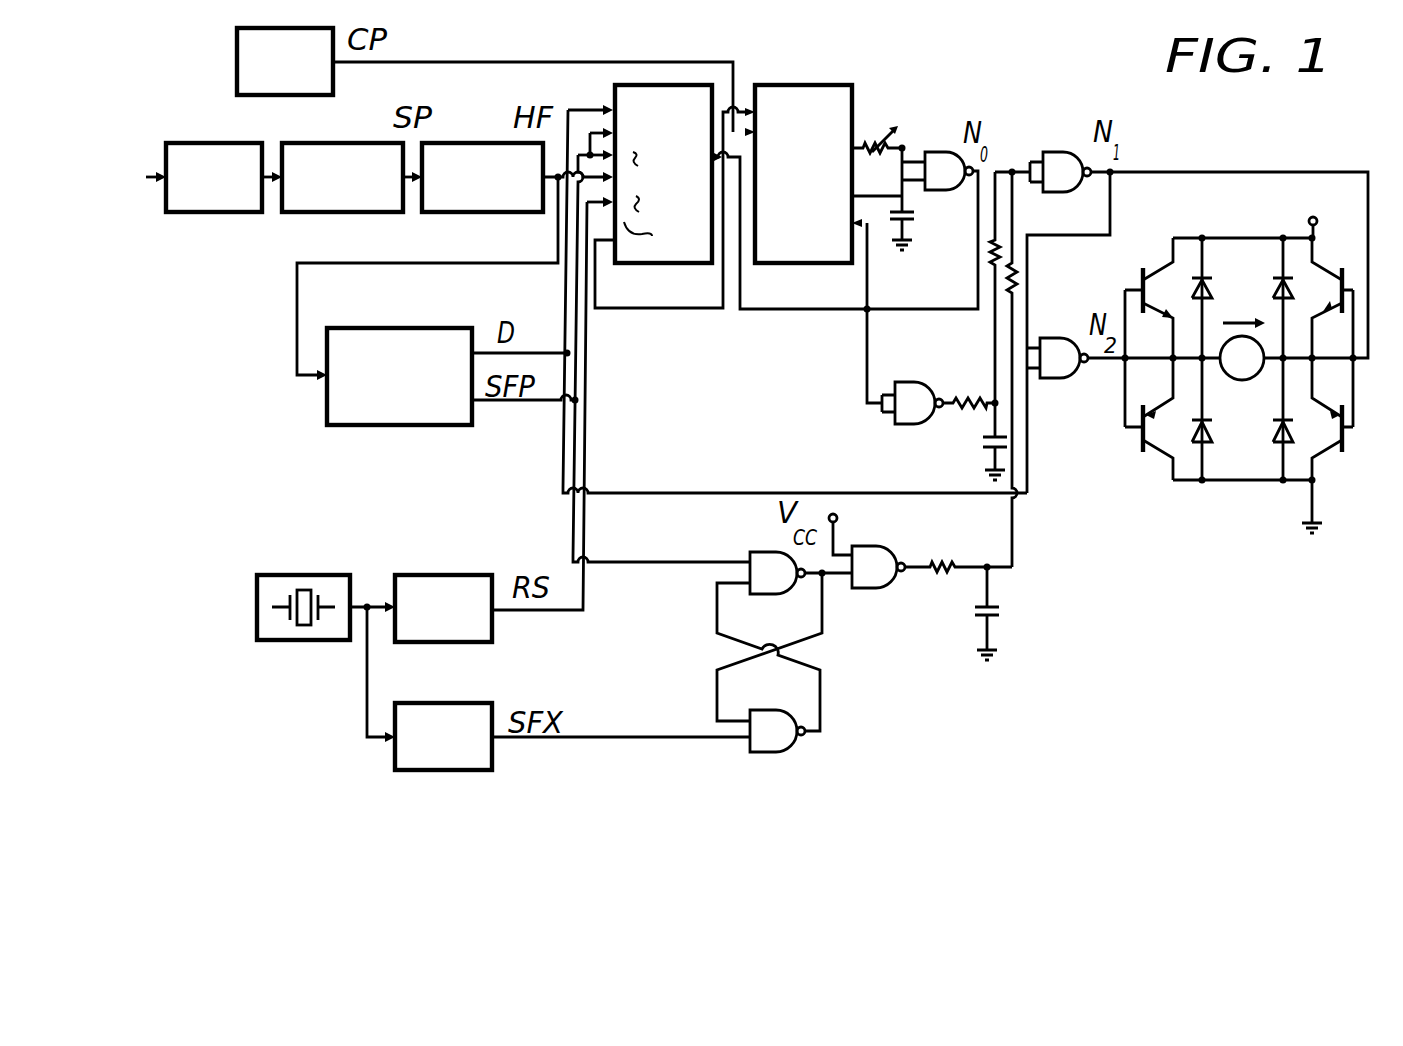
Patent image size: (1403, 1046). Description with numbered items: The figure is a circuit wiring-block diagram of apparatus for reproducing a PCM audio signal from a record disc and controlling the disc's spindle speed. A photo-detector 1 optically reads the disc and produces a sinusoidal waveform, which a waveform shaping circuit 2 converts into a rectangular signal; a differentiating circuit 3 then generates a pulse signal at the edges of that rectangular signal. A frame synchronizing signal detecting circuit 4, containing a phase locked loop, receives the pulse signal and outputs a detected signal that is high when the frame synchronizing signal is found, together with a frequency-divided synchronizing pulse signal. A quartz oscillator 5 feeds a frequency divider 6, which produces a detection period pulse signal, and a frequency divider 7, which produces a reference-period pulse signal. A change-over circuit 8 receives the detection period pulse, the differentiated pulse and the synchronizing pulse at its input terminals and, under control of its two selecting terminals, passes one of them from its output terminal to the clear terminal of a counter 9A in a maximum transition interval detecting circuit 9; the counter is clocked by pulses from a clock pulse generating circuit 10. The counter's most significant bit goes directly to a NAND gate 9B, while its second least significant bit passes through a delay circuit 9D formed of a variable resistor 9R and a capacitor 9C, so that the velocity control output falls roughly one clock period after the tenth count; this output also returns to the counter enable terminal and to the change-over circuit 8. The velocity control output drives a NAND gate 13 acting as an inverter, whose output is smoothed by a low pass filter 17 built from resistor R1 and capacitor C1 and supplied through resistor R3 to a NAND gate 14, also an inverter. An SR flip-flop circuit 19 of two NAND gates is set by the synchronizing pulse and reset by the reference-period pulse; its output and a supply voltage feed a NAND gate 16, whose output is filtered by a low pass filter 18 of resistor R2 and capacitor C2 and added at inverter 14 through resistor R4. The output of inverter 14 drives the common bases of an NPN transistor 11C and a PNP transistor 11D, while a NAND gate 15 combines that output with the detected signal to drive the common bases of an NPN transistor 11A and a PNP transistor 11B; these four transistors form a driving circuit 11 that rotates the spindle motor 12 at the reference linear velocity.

The photo-detector 1 is at (218, 213).
The waveform shaping circuit 2 is at (356, 213).
The differentiating circuit 3 is at (478, 213).
The frame synchronizing signal detecting circuit 4 is at (425, 426).
The quartz oscillator 5 is at (331, 642).
The frequency divider 6 is at (466, 643).
The frequency divider 7 is at (394, 760).
The change-over circuit 8 is at (666, 264).
The maximum transition interval detecting circuit 9 is at (850, 60).
The counter 9A is at (790, 264).
The NAND gate 9B is at (928, 192).
The capacitor 9C is at (916, 224).
The delay circuit 9D is at (946, 121).
The variable resistor 9R is at (877, 160).
The clock pulse generating circuit 10 is at (237, 62).
The driving circuit 11 is at (1217, 215).
The NPN transistor 11A is at (1143, 266).
The PNP transistor 11B is at (1143, 454).
The NPN transistor 11C is at (1342, 266).
The PNP transistor 11D is at (1342, 454).
The spindle motor 12 is at (1256, 380).
The NAND gate 13 is at (893, 426).
The NAND gate 14 is at (1047, 194).
The NAND gate 15 is at (1060, 380).
The NAND gate 16 is at (873, 590).
The low pass filter 17 is at (941, 479).
The low pass filter 18 is at (953, 645).
The SR flip-flop circuit 19 is at (700, 665).
The resistor R1 is at (964, 395).
The resistor R2 is at (926, 564).
The resistor R3 is at (990, 302).
The resistor R4 is at (1017, 274).
The capacitor C1 is at (985, 436).
The capacitor C2 is at (1002, 622).